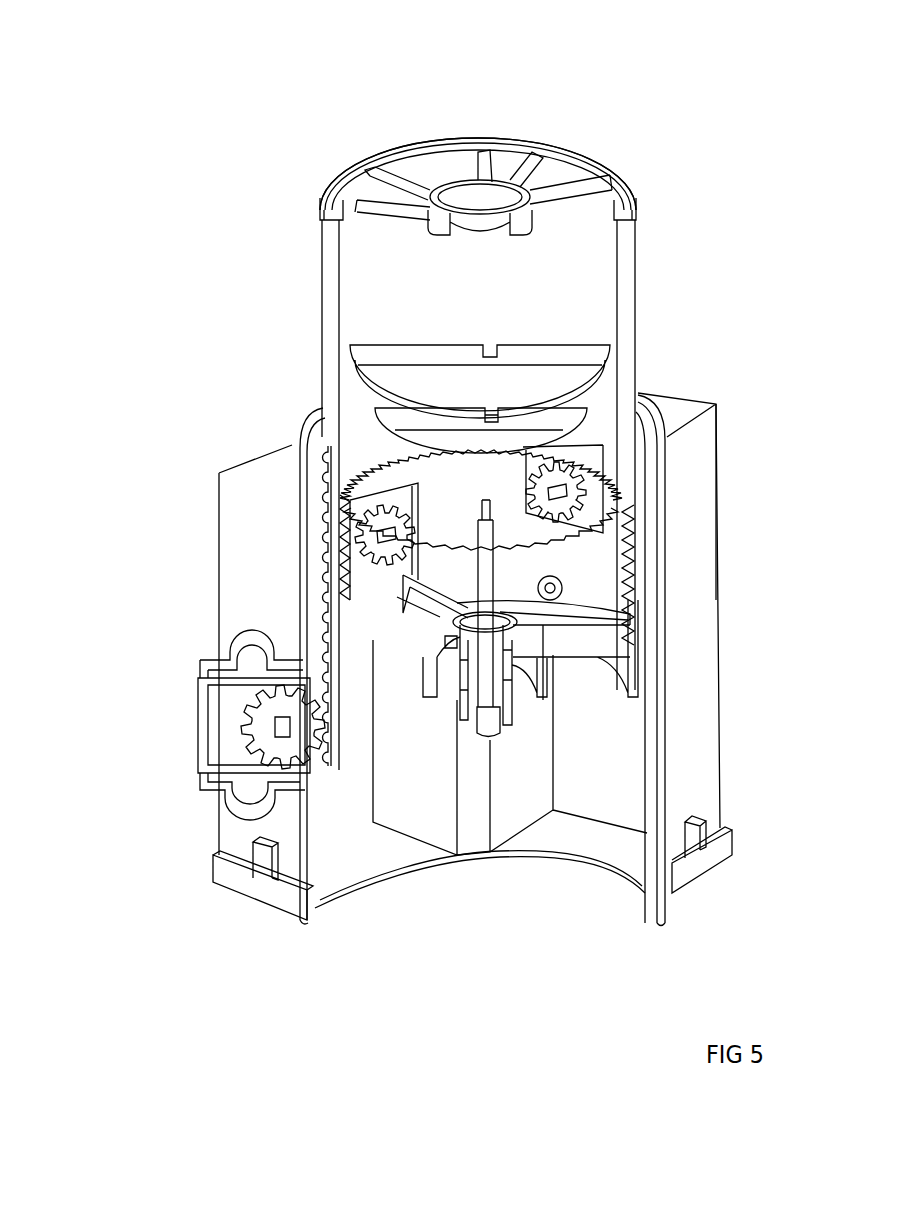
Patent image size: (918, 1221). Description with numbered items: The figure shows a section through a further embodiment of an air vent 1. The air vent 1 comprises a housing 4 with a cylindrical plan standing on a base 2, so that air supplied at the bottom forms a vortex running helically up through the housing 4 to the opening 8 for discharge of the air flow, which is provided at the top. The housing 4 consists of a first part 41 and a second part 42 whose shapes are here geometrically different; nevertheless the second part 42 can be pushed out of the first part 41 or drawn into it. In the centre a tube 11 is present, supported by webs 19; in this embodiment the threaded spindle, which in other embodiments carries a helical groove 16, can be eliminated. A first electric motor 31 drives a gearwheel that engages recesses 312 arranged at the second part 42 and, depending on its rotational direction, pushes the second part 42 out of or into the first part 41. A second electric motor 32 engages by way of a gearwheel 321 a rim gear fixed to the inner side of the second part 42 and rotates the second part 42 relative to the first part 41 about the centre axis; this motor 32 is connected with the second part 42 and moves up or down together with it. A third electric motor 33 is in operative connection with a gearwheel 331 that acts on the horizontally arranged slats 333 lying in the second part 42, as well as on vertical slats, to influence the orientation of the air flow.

The air vent 1 is at (632, 134).
The base 2 is at (267, 908).
The housing 4 is at (739, 441).
The opening for discharge of a flow of air 8 is at (458, 116).
The tube 11 is at (487, 660).
The groove 16 is at (515, 700).
The webs 19 is at (595, 638).
The first electric motor 31 is at (205, 705).
The second electric motor 32 is at (279, 413).
The third electric motor 33 is at (676, 362).
The first part of the housing 41 is at (720, 607).
The second part of the housing 42 is at (625, 190).
The recesses 312 is at (325, 565).
The gearwheel 321 is at (383, 523).
The gearwheel 331 is at (580, 500).
The horizontally arranged slats 333 is at (528, 376).